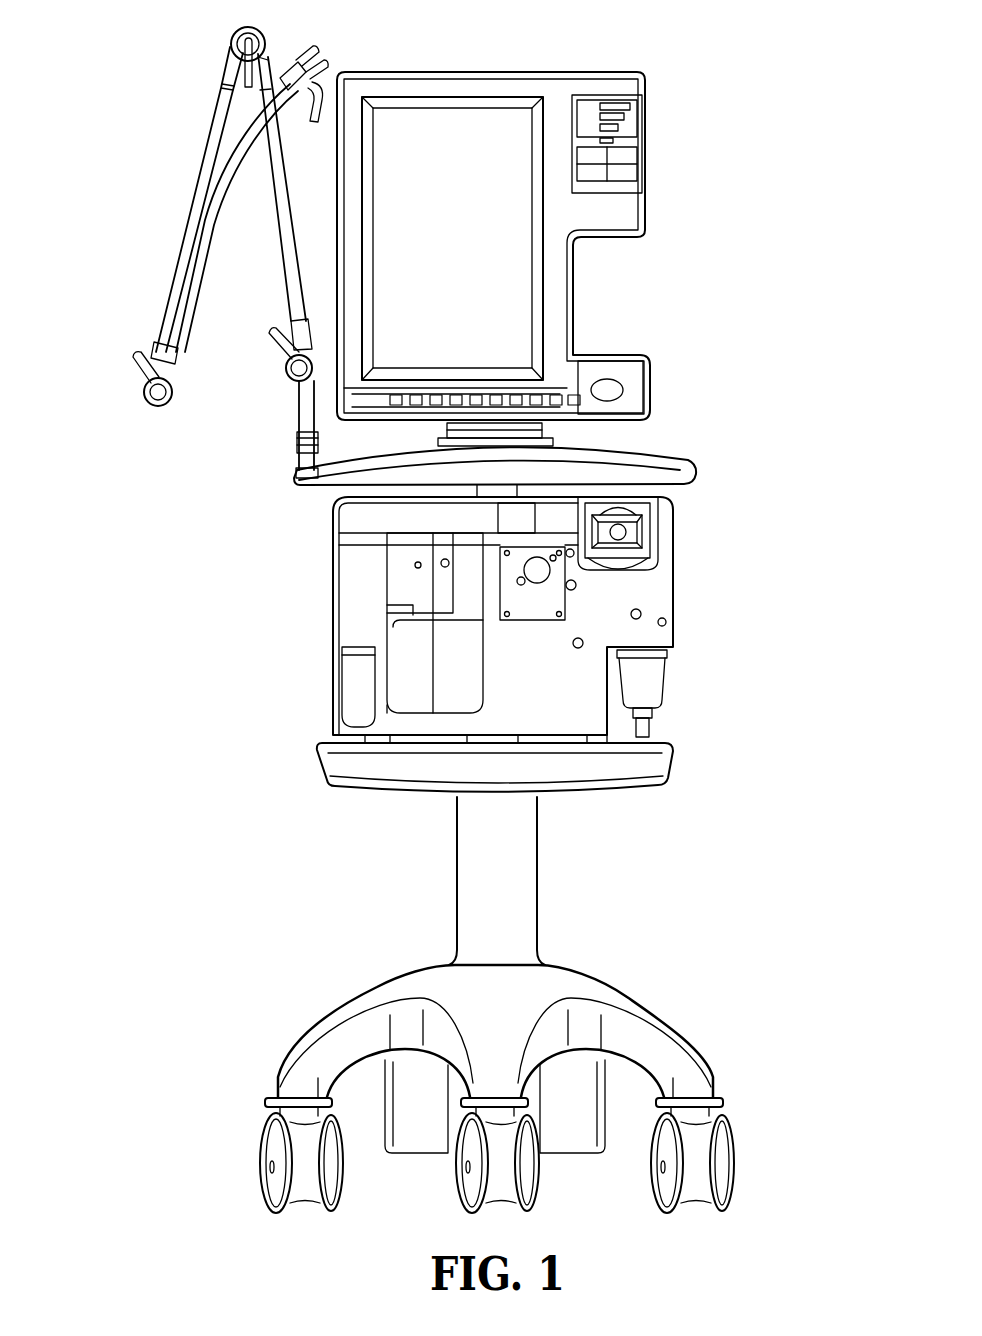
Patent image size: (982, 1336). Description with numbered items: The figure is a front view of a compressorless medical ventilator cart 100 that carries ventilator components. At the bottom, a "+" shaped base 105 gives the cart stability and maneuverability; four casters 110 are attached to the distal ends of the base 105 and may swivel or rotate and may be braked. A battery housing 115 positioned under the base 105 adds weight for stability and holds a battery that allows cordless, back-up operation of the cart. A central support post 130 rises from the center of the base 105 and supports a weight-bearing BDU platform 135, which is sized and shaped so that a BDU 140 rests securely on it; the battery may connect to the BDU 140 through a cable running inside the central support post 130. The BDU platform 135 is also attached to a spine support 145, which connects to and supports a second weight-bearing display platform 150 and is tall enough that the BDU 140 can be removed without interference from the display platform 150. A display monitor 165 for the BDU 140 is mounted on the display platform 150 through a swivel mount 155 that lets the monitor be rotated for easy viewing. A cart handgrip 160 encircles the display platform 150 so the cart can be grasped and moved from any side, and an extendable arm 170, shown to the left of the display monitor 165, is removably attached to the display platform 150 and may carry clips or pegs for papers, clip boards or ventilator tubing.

The compressorless medical ventilator cart 100 is at (803, 86).
The "+" shaped base 105 is at (343, 1023).
The casters 110 is at (303, 1167).
The battery housing 115 is at (567, 1138).
The central support post 130 is at (521, 871).
The BDU platform 135 is at (650, 765).
The BDU 140 is at (355, 612).
The spine support 145 is at (505, 492).
The display platform 150 is at (293, 421).
The swivel mount 155 is at (537, 428).
The cart handgrip 160 is at (293, 477).
The display monitor 165 is at (648, 143).
The extendable arm 170 is at (185, 237).